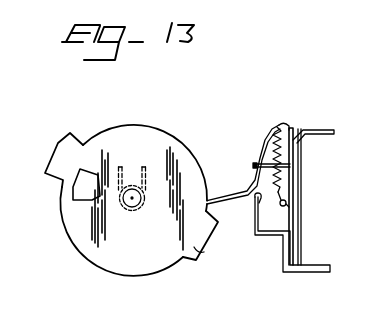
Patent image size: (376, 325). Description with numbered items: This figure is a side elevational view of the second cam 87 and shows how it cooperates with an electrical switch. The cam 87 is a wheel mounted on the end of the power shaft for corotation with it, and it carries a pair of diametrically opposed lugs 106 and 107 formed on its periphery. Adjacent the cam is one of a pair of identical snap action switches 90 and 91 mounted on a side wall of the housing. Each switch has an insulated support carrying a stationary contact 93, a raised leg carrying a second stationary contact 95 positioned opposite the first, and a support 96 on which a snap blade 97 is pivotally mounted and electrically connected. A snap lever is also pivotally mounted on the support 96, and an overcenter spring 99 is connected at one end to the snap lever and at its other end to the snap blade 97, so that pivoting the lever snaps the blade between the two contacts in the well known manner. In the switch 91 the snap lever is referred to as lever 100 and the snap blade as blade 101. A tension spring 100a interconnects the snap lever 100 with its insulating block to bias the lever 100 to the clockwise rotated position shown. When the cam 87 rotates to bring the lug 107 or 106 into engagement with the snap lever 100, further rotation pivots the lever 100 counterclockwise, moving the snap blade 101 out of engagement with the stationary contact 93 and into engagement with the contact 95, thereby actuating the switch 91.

The cam 87 is at (145, 246).
The snap action switch 90 is at (73, 199).
The snap action switch 91 is at (303, 229).
The stationary contact 93 is at (290, 207).
The stationary contact 95 is at (257, 213).
The support 96 is at (297, 141).
The snap blade 97 is at (293, 165).
The overcenter spring 99 is at (273, 146).
The snap lever 100 is at (247, 191).
The tension spring 100a is at (283, 127).
The snap blade 101 is at (288, 174).
The lug 106 is at (199, 256).
The lug 107 is at (60, 152).